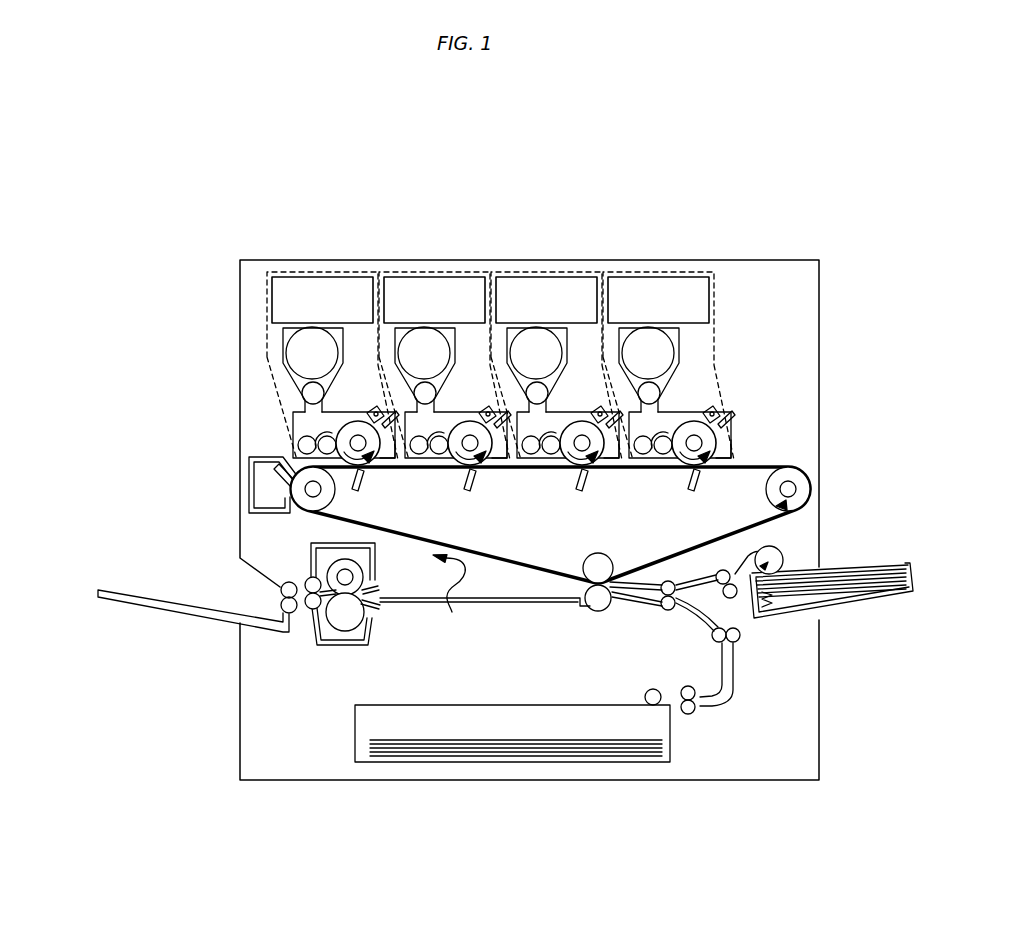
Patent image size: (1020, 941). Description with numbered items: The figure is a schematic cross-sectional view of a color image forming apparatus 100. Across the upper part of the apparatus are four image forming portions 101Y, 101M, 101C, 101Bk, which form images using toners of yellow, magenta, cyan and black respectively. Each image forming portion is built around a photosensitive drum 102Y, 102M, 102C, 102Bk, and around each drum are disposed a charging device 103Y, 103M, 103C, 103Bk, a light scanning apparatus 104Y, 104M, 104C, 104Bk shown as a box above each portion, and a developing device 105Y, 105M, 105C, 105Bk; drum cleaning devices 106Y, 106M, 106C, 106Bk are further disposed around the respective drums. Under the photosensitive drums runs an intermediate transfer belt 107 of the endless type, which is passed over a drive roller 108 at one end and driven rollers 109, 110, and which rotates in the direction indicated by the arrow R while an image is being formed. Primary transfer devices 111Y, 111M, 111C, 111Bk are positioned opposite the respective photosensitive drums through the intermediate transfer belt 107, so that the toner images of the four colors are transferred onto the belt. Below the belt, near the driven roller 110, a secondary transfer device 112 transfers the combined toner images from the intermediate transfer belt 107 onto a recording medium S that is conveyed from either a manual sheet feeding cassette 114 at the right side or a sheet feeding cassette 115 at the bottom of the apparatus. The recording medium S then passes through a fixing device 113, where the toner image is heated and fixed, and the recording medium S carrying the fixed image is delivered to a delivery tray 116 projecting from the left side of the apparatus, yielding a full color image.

The image forming apparatus 100 is at (790, 255).
The image forming portion 101Y is at (278, 272).
The image forming portion 101M is at (436, 314).
The image forming portion 101C is at (550, 314).
The image forming portion 101Bk is at (666, 314).
The photosensitive drum 102Y is at (352, 430).
The photosensitive drum 102M is at (457, 318).
The photosensitive drum 102C is at (571, 318).
The photosensitive drum 102Bk is at (698, 332).
The charging device 103Y is at (366, 405).
The charging device 103M is at (480, 315).
The charging device 103C is at (593, 315).
The charging device 103Bk is at (737, 300).
The light scanning apparatus 104Y is at (305, 285).
The light scanning apparatus 104M is at (434, 226).
The light scanning apparatus 104C is at (546, 226).
The light scanning apparatus 104Bk is at (658, 228).
The developing device 105Y is at (300, 428).
The developing device 105M is at (451, 471).
The developing device 105C is at (564, 471).
The developing device 105Bk is at (675, 473).
The drum cleaning device 106Y is at (390, 460).
The drum cleaning device 106M is at (508, 470).
The drum cleaning device 106C is at (618, 469).
The drum cleaning device 106Bk is at (732, 468).
The intermediate transfer belt 107 is at (500, 570).
The drive roller 108 is at (800, 484).
The driven roller 109 is at (298, 508).
The driven roller 110 is at (590, 560).
The primary transfer device 111Y is at (361, 492).
The primary transfer device 111M is at (476, 493).
The primary transfer device 111C is at (587, 493).
The primary transfer device 111Bk is at (705, 493).
The secondary transfer device 112 is at (603, 612).
The fixing device 113 is at (327, 645).
The manual sheet feeding cassette 114 is at (872, 597).
The sheet feeding cassette 115 is at (355, 735).
The delivery tray 116 is at (158, 600).
The recording medium S is at (857, 572).
The arrow R is at (449, 599).